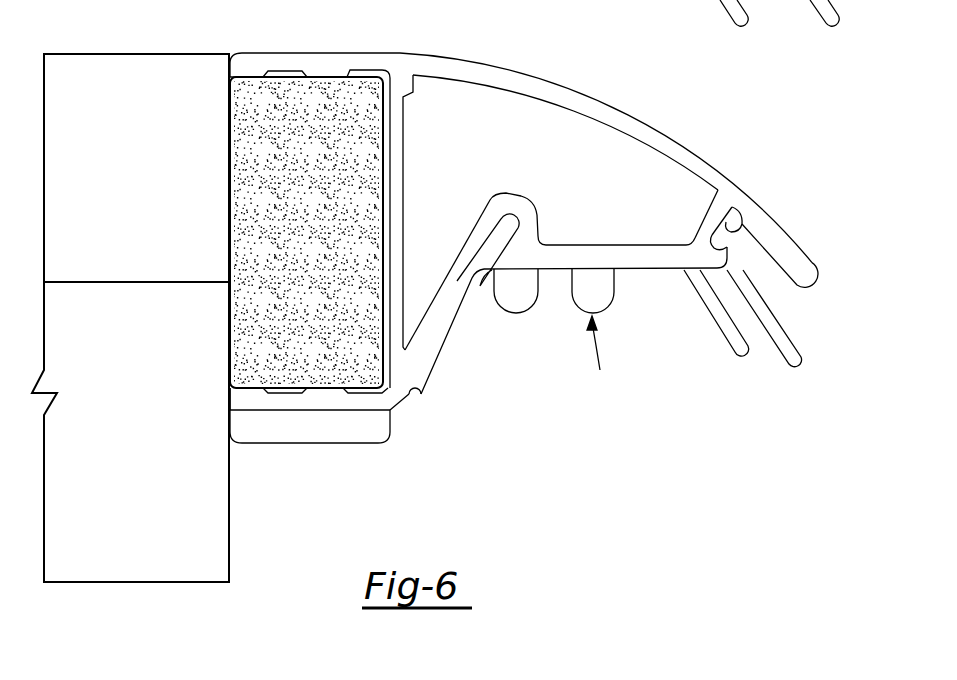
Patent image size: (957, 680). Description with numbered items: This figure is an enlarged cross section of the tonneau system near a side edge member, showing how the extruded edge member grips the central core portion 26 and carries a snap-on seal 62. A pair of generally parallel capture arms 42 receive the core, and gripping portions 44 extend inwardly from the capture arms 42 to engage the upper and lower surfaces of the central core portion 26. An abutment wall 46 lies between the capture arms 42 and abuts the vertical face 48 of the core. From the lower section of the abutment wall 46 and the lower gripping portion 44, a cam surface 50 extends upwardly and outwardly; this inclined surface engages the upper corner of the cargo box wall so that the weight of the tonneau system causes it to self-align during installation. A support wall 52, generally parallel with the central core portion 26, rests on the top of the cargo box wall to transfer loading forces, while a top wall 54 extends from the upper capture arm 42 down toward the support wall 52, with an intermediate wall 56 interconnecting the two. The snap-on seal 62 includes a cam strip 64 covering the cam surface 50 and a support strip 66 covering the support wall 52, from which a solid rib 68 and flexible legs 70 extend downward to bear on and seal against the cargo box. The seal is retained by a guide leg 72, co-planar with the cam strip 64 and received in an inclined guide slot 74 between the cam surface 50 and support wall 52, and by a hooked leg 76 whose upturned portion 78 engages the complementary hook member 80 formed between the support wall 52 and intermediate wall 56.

The central core portion 26 is at (248, 170).
The capture arms 42 is at (322, 65).
The gripping portions 44 is at (345, 78).
The abutment wall 46 is at (403, 135).
The vertical face 48 is at (392, 242).
The cam surface 50 is at (438, 330).
The support wall 52 is at (636, 258).
The top wall 54 is at (649, 130).
The intermediate wall 56 is at (712, 213).
The snap-on seal 62 is at (605, 360).
The cam strip 64 is at (418, 396).
The support strip 66 is at (672, 270).
The rib 68 is at (516, 312).
The flexible legs 70 is at (790, 346).
The guide leg 72 is at (503, 231).
The guide slot 74 is at (503, 216).
The hooked leg 76 is at (738, 252).
The upturned portion 78 is at (737, 226).
The hook member 80 is at (705, 242).